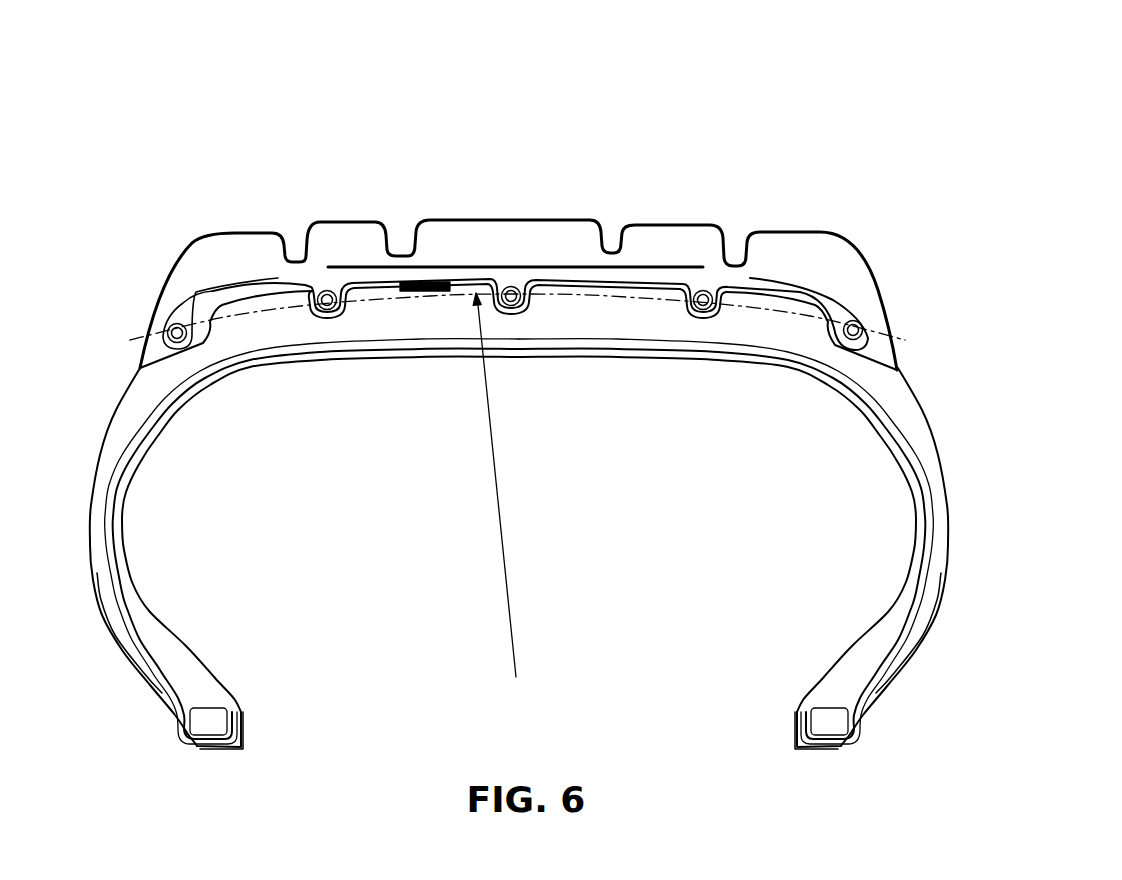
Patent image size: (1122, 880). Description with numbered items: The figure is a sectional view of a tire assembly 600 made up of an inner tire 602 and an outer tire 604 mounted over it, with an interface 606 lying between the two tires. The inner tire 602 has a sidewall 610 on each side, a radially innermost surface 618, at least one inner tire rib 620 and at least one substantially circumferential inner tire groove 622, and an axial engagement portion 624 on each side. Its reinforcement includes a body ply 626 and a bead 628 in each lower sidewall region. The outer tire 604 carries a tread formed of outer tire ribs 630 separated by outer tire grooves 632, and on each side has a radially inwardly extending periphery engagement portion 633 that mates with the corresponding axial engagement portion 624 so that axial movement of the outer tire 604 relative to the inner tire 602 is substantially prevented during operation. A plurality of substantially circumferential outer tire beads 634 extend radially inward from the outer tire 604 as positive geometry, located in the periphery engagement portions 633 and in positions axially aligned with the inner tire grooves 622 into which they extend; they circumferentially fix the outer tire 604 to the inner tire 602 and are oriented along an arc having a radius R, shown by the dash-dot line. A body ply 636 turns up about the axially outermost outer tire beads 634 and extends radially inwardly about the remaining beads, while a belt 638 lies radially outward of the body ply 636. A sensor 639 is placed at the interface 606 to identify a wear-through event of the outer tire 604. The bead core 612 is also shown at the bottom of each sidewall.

The tire assembly 600 is at (246, 128).
The inner tire 602 is at (976, 427).
The outer tire 604 is at (931, 275).
The interface 606 is at (591, 262).
The sidewall 610 is at (104, 440).
The bead core 612 is at (213, 722).
The radially innermost surface 618 is at (580, 366).
The inner tire rib 620 is at (745, 323).
The substantially circumferential inner tire groove 622 is at (765, 300).
The axial engagement portion 624 is at (213, 380).
The body ply 626 is at (284, 362).
The bead 628 is at (244, 721).
The outer tire rib 630 is at (470, 217).
The outer tire groove 632 is at (722, 232).
The periphery engagement portion 633 is at (888, 320).
The outer tire bead 634 is at (165, 333).
The body ply 636 is at (195, 290).
The belt 638 is at (490, 279).
The sensor 639 is at (410, 283).